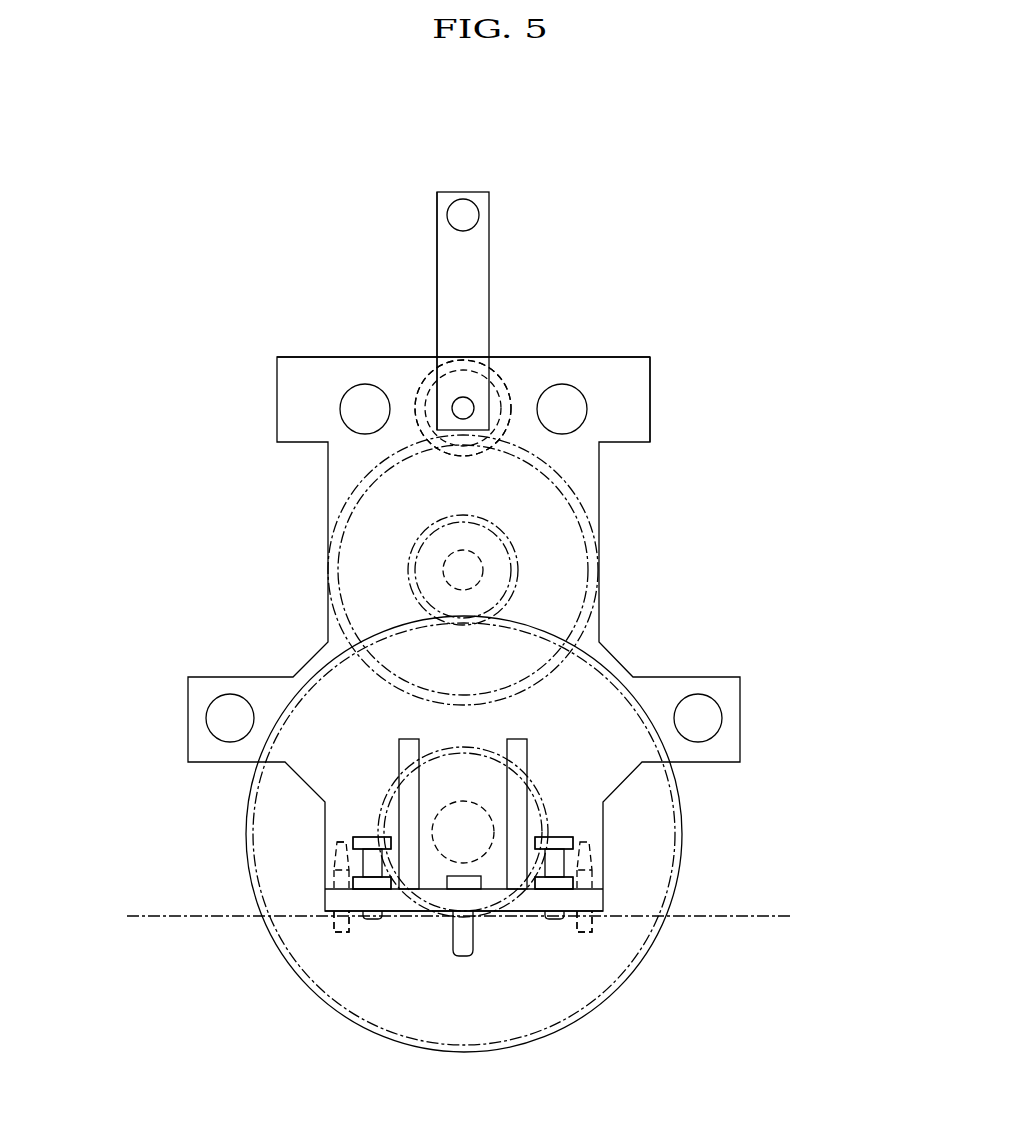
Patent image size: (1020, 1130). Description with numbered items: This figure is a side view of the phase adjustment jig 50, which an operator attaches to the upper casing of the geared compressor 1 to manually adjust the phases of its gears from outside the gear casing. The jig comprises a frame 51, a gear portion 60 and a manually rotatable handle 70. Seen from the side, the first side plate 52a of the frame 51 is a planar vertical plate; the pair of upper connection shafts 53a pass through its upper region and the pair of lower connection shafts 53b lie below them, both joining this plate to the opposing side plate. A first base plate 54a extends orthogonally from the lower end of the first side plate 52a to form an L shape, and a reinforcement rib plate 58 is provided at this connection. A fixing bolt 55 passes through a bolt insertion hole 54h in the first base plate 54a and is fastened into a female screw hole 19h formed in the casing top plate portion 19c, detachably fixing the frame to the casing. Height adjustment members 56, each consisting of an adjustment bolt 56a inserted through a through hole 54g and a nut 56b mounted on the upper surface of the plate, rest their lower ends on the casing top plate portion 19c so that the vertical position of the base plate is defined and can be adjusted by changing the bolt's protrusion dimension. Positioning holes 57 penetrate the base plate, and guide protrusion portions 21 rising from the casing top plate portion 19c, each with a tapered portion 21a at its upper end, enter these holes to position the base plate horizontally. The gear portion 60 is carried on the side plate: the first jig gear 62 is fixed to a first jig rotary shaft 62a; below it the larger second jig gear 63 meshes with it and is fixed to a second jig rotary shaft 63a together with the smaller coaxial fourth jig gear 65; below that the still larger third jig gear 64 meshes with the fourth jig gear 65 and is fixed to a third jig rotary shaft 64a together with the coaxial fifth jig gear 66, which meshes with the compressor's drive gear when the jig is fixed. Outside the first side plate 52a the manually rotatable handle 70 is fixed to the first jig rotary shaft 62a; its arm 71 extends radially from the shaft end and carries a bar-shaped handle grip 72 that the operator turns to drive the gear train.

The geared compressor 1 is at (147, 903).
The casing top plate portion 19c is at (770, 916).
The female screw hole 19h is at (461, 958).
The guide protrusion portion 21 is at (333, 868).
The tapered portion 21a is at (336, 845).
The phase adjustment jig 50 is at (661, 347).
The frame 51 is at (295, 357).
The first side plate 52a is at (651, 420).
The upper connection shaft 53a is at (340, 405).
The lower connection shaft 53b is at (207, 717).
The first base plate 54a is at (527, 913).
The through hole 54g is at (345, 932).
The bolt insertion hole 54h is at (473, 893).
The fixing bolt 55 is at (467, 888).
The height adjustment member 56 is at (365, 860).
The adjustment bolt 56a is at (365, 837).
The nut 56b is at (353, 882).
The positioning hole 57 is at (365, 918).
The reinforcement rib plate 58 is at (399, 752).
The gear portion 60 is at (425, 365).
The first jig gear 62 is at (497, 445).
The first jig rotary shaft 62a is at (465, 397).
The second jig gear 63 is at (583, 500).
The second jig rotary shaft 63a is at (450, 553).
The third jig gear 64 is at (325, 1005).
The third jig rotary shaft 64a is at (460, 800).
The fourth jig gear 65 is at (517, 568).
The fifth jig gear 66 is at (523, 772).
The manually rotatable handle 70 is at (492, 267).
The arm 71 is at (437, 267).
The handle grip 72 is at (477, 200).